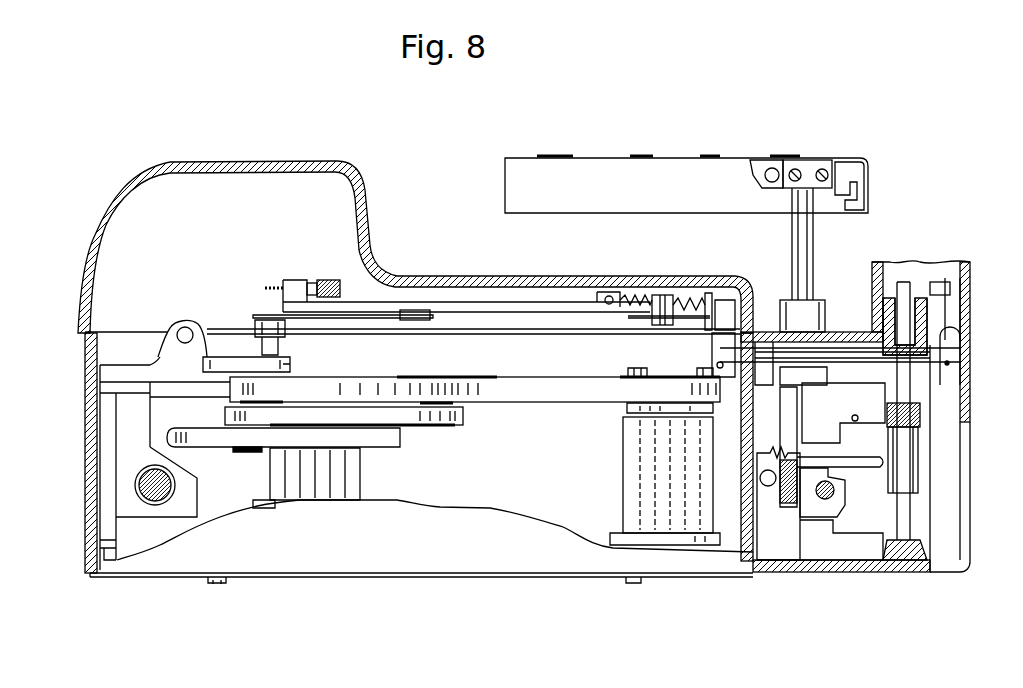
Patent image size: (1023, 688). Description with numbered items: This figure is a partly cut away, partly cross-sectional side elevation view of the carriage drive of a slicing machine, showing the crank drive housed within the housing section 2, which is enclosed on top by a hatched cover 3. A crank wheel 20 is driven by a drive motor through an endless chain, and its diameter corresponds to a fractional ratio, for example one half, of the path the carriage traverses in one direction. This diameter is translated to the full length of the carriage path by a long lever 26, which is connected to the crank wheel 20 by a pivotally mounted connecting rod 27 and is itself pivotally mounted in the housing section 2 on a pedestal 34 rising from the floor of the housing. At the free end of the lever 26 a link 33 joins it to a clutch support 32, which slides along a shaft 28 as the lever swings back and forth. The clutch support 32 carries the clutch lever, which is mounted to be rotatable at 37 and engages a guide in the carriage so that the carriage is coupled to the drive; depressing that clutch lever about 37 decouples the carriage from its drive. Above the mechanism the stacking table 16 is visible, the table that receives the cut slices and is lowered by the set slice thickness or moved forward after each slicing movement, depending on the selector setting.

The housing section 2 is at (94, 556).
The housing cover 3 is at (94, 240).
The stacking table 16 is at (597, 179).
The crank wheel 20 is at (385, 446).
The lever 26 is at (545, 392).
The connecting rod 27 is at (462, 420).
The shaft 28 is at (142, 486).
The clutch support 32 is at (166, 350).
The link 33 is at (290, 365).
The pedestal 34 is at (630, 483).
The rotatable mounting of clutch lever 37 is at (187, 330).